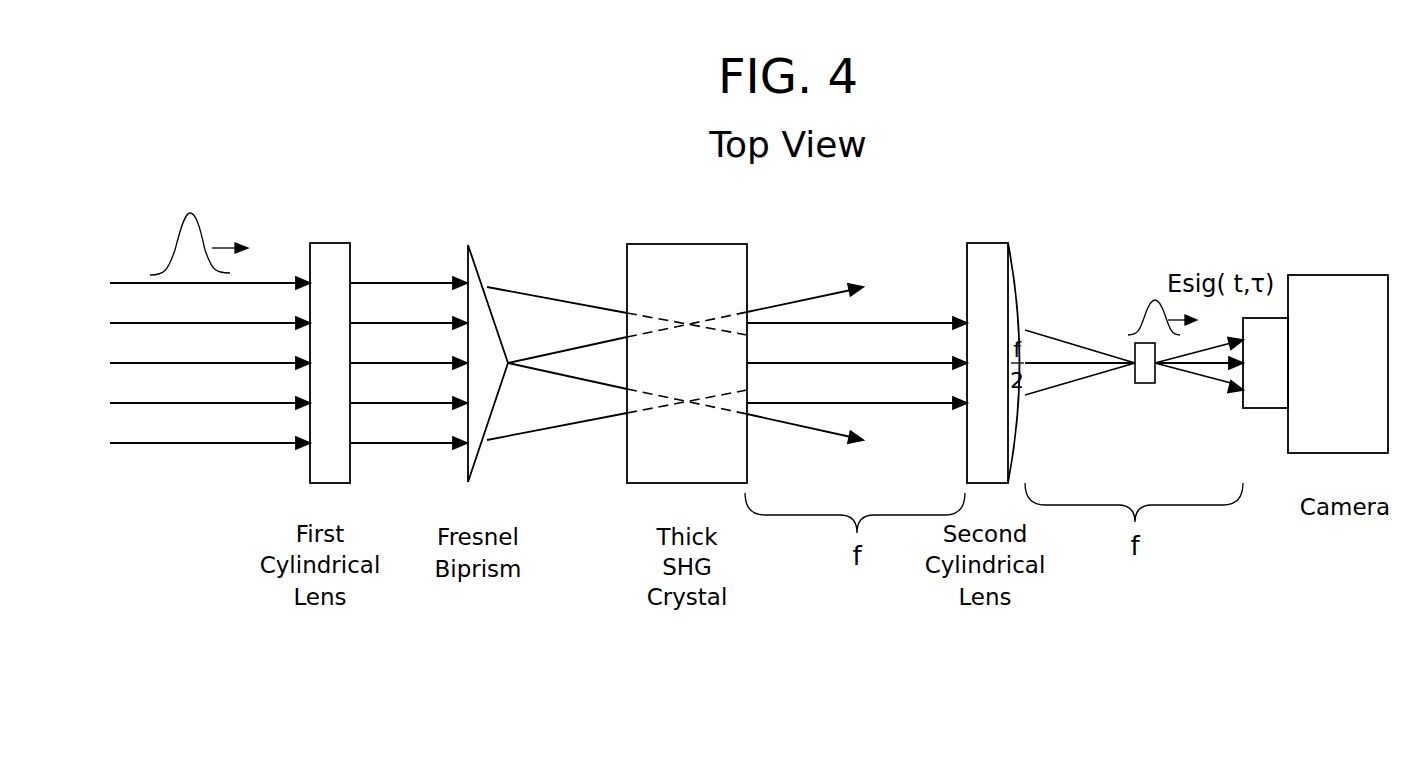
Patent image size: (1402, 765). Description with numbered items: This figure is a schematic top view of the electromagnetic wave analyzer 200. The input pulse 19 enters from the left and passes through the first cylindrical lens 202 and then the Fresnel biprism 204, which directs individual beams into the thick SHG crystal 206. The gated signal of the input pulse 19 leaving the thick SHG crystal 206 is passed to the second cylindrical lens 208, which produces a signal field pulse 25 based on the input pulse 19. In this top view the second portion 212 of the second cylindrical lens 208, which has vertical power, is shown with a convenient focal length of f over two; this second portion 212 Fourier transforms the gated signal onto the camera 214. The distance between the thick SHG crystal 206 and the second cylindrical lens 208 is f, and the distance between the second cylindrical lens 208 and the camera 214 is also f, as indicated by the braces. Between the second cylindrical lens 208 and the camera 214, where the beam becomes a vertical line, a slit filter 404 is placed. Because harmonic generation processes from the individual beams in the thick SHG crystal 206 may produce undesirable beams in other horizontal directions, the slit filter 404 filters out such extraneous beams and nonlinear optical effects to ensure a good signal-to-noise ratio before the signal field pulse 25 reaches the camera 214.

The input pulse 19 is at (175, 229).
The electromagnetic wave analyzer 200 is at (352, 678).
The first cylindrical lens 202 is at (333, 277).
The Fresnel biprism 204 is at (481, 298).
The thick SHG crystal 206 is at (718, 275).
The second cylindrical lens 208 is at (990, 267).
The second portion of the second cylindrical lens 212 is at (1017, 302).
The slit filter 404 is at (1143, 372).
The signal field pulse 25 is at (1149, 298).
The camera 214 is at (1360, 378).